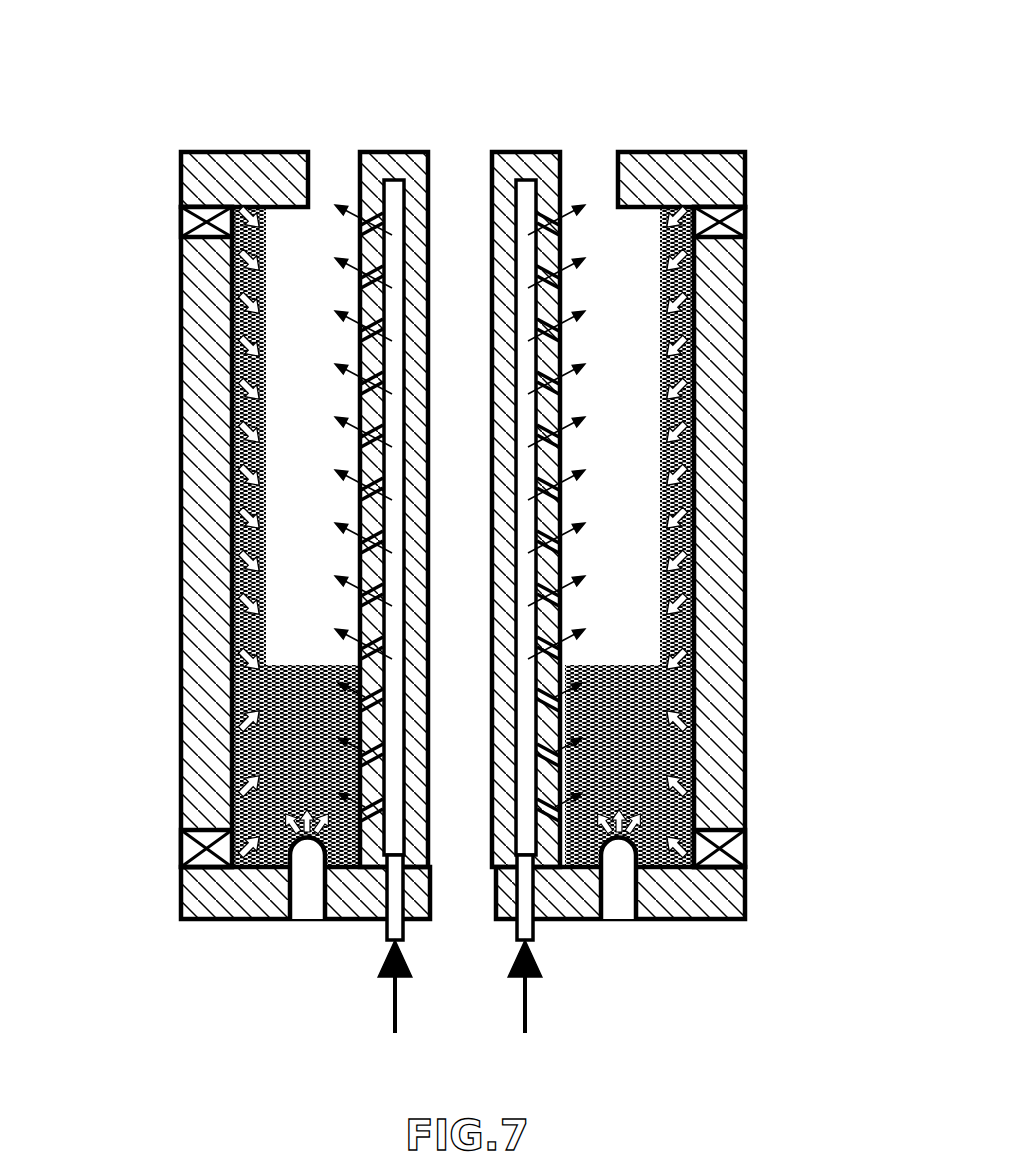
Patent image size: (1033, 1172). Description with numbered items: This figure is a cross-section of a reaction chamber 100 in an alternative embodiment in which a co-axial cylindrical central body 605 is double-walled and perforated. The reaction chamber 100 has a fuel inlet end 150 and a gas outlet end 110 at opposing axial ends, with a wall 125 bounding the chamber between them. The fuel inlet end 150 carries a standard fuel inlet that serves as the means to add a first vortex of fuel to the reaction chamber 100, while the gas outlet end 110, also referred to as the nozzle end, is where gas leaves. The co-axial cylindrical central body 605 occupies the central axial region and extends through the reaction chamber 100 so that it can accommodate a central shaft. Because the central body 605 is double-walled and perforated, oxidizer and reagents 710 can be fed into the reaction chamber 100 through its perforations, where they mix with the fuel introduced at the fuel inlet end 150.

The reaction chamber 100 is at (143, 120).
The gas outlet end 110 is at (683, 178).
The wall 125 is at (717, 465).
The fuel inlet end 150 is at (715, 900).
The co-axial cylindrical central body 605 is at (541, 162).
The oxidizer and reagents 710 is at (393, 990).